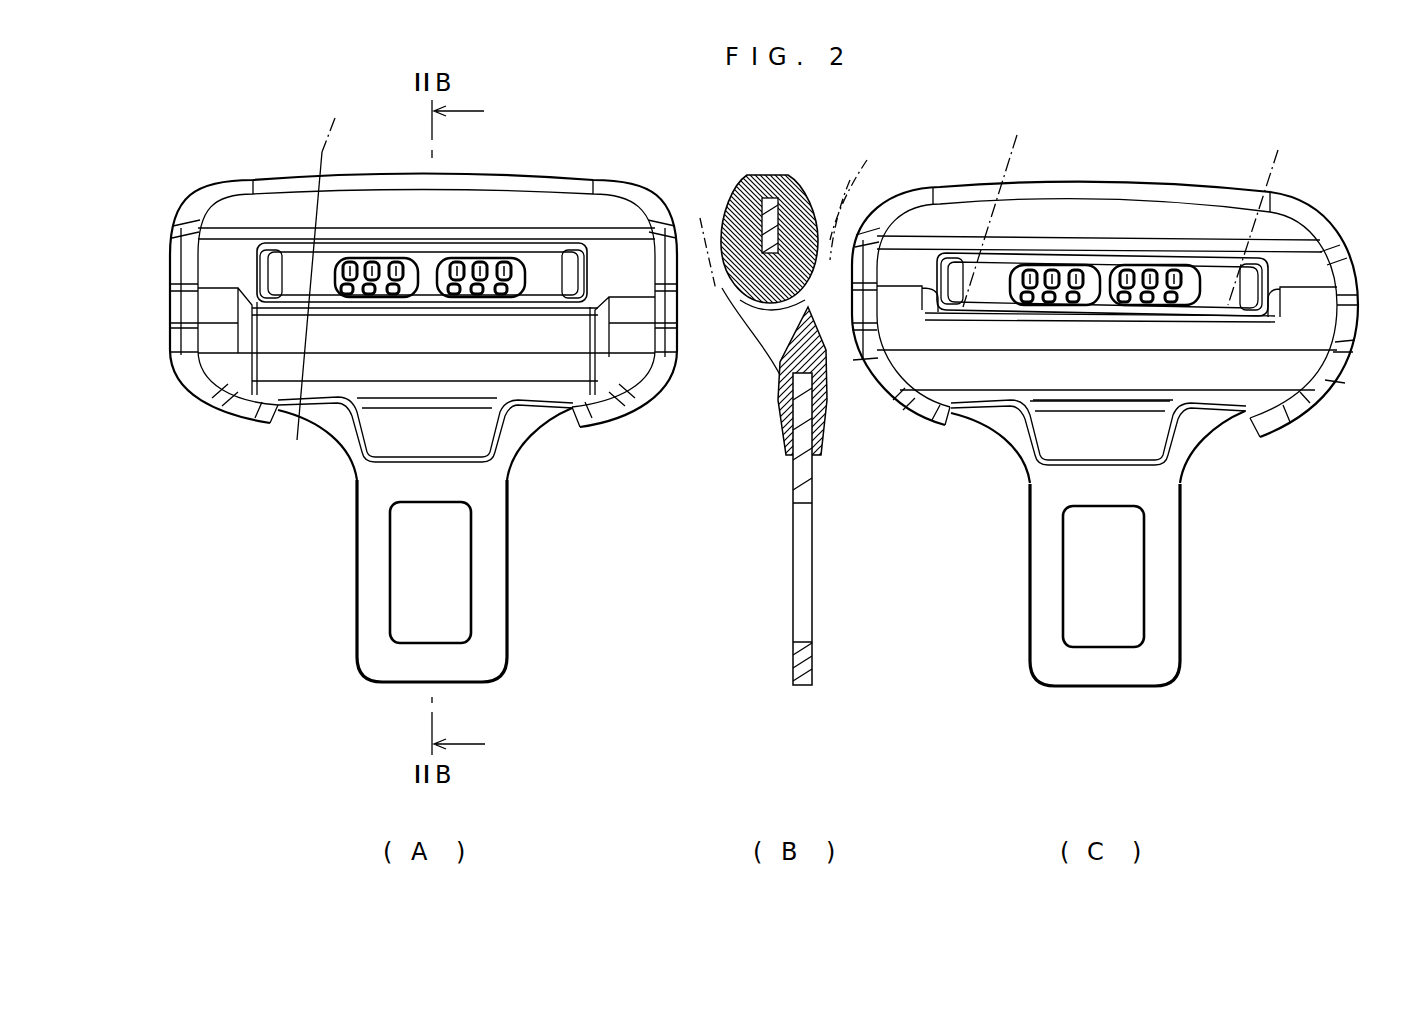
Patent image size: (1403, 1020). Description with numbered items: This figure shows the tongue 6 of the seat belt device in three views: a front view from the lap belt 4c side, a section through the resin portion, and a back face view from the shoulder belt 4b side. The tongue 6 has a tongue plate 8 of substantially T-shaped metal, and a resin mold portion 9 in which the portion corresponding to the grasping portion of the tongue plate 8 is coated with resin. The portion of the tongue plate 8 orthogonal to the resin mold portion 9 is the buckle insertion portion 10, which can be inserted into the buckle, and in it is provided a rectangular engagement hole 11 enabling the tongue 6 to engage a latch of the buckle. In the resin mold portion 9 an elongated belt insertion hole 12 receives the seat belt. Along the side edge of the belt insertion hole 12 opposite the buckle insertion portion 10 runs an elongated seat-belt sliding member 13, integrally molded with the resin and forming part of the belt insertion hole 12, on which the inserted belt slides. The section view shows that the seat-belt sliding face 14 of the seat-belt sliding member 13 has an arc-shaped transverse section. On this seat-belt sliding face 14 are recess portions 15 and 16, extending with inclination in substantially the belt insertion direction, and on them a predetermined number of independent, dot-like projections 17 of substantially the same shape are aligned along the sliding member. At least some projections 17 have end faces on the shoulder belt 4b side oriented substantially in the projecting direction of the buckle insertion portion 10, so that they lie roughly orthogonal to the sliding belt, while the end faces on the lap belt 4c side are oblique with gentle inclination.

The shoulder belt 4b is at (1343, 153).
The lap belt 4c is at (320, 150).
The tongue 6 is at (620, 515).
The tongue plate 8 is at (504, 497).
The resin mold portion 9 is at (640, 412).
The buckle insertion portion 10 is at (363, 597).
The engagement hole 11 is at (446, 589).
The belt insertion hole 12 is at (257, 323).
The seat-belt sliding member 13 is at (570, 268).
The seat-belt sliding face 14 is at (600, 122).
The recess portion 15 is at (418, 262).
The recess portion 16 is at (516, 262).
The projections 17 is at (396, 260).